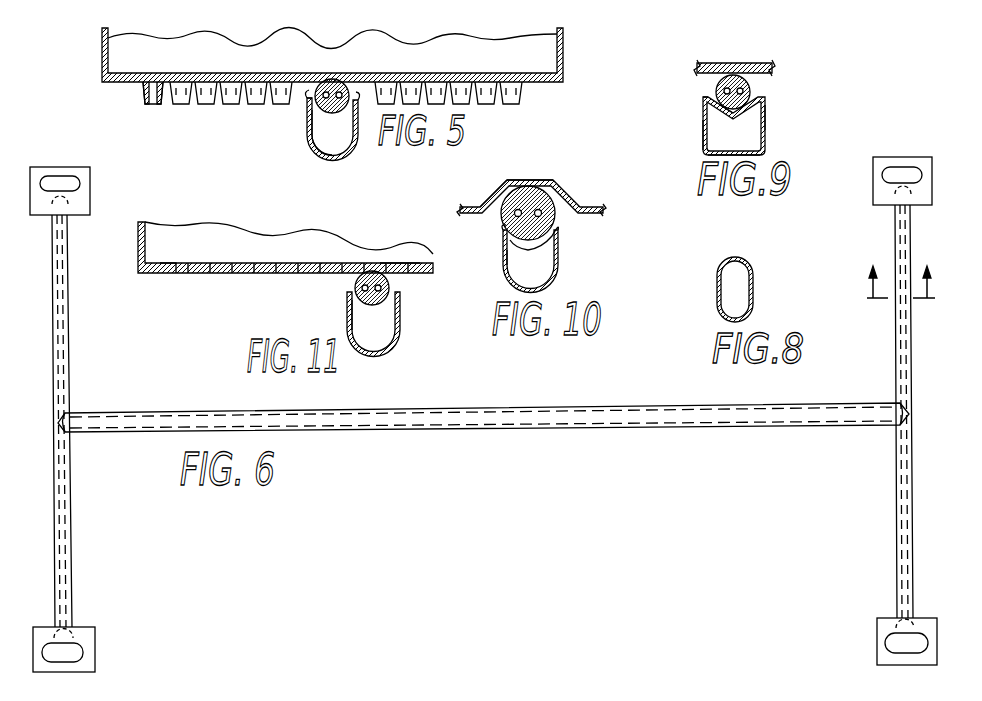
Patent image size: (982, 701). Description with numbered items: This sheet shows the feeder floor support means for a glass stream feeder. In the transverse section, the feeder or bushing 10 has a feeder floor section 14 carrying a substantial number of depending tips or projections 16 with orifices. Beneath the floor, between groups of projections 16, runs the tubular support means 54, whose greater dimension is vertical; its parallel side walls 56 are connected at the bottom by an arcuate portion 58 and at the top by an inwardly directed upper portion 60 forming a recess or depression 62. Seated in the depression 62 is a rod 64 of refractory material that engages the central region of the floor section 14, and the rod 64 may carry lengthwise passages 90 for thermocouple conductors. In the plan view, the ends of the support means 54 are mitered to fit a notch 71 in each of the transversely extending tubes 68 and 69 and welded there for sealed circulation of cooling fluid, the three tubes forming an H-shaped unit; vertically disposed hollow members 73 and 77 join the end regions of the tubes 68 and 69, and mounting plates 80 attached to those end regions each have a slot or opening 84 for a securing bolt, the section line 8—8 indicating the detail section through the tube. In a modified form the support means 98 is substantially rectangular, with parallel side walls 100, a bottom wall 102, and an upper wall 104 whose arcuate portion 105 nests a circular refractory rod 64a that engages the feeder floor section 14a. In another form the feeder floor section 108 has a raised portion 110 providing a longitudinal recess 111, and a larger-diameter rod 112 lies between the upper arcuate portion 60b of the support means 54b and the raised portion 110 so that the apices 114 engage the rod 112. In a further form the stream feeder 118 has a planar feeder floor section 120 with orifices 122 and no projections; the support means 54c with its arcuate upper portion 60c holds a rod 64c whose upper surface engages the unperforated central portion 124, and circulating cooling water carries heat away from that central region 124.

In FIG. 5, the feeder or bushing 10 is at (100, 50).
In FIG. 5, the feeder floor section 14 is at (232, 73).
In FIG. 5, the depending tips or projections 16 is at (222, 105).
In FIG. 5, the tubular support means 54 is at (318, 170).
In FIG. 6, the tubular support means 54 is at (480, 434).
In FIG. 5, the side walls 56 is at (305, 112).
In FIG. 5, the arcuate portion 58 is at (312, 152).
In FIG. 5, the upper portion 60 is at (316, 122).
In FIG. 5, the recess or depression 62 is at (305, 100).
In FIG. 5, the rod 64 is at (345, 84).
In FIG. 5, the passages 90 is at (327, 90).
In FIG. 9, the feeder floor section 14a is at (703, 62).
In FIG. 9, the rod or elongated member 64a is at (718, 88).
In FIG. 9, the tubular support means or body 98 is at (774, 90).
In FIG. 9, the side walls 100 is at (704, 140).
In FIG. 9, the bottom wall 102 is at (712, 154).
In FIG. 9, the upper wall 104 is at (706, 96).
In FIG. 9, the arcuate portion 105 is at (725, 112).
In FIG. 10, the stream feeder floor section 108 is at (600, 208).
In FIG. 10, the raised portion 110 is at (538, 196).
In FIG. 10, the longitudinal recess 111 is at (492, 208).
In FIG. 10, the rod 112 is at (537, 182).
In FIG. 10, the apices 114 is at (504, 234).
In FIG. 10, the support means 54b is at (562, 270).
In FIG. 10, the upper arcuate portion 60b is at (512, 252).
In FIG. 11, the stream feeder 118 is at (134, 268).
In FIG. 11, the feeder floor section 120 is at (308, 224).
In FIG. 11, the orifices 122 is at (232, 262).
In FIG. 11, the unperforated central portion 124 is at (384, 262).
In FIG. 11, the rod 64c is at (356, 282).
In FIG. 11, the support means 54c is at (400, 346).
In FIG. 11, the arcuate upper portion 60c is at (352, 306).
In FIG. 6, the tubular member or tube 68 is at (70, 358).
In FIG. 8, the tubular member or tube 69 is at (755, 272).
In FIG. 6, the tubular member or tube 69 is at (896, 500).
In FIG. 6, the notch 71 is at (63, 416).
In FIG. 6, the vertically disposed hollow members 73 is at (78, 200).
In FIG. 6, the vertically disposed hollow members 77 is at (880, 195).
In FIG. 6, the mounting plates 80 is at (104, 145).
In FIG. 6, the slot or opening 84 is at (62, 183).
In FIG. 6, the section line 8- 8 is at (900, 266).